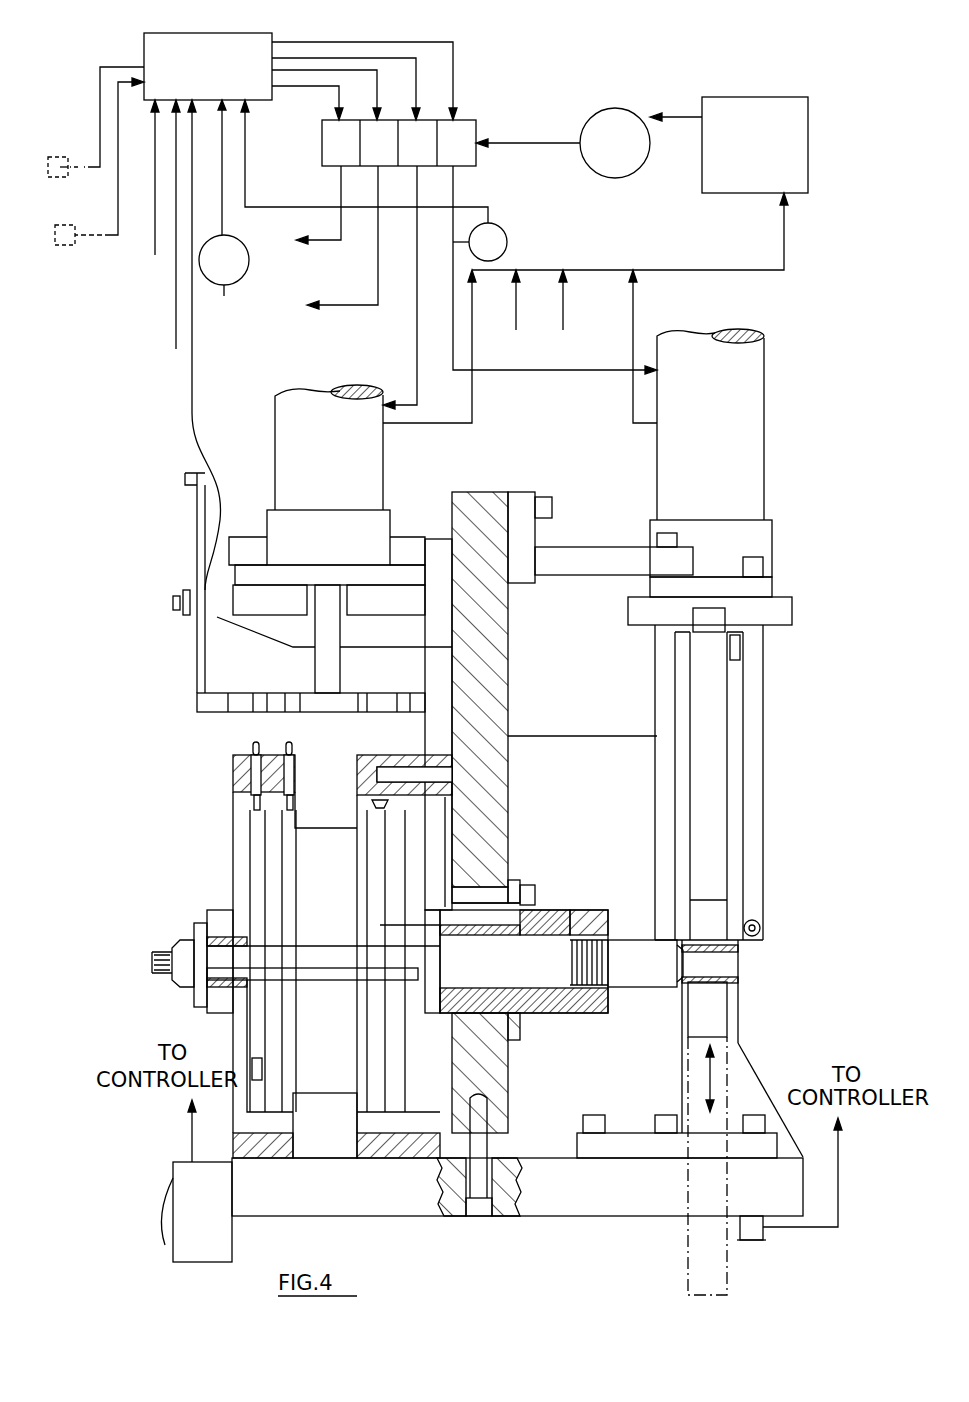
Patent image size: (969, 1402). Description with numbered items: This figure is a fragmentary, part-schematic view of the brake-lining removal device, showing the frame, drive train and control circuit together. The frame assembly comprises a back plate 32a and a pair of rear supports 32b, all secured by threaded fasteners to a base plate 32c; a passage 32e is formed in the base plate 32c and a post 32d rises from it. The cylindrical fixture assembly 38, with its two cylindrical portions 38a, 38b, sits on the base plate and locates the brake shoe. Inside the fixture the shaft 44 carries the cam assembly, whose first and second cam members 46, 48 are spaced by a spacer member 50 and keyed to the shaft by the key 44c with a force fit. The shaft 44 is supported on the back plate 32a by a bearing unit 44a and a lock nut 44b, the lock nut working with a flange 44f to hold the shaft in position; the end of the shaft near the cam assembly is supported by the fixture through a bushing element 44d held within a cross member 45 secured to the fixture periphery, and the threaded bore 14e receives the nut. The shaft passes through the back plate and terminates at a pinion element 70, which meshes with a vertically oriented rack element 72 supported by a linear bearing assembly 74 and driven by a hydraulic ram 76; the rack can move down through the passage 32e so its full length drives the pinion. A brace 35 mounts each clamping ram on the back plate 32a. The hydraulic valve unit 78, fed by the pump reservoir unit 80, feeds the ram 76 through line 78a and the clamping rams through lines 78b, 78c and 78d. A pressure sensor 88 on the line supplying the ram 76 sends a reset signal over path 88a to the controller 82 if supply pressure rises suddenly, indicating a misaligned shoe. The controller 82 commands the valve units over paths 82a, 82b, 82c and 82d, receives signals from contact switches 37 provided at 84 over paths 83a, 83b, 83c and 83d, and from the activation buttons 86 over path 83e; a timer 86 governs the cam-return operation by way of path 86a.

The controller 82 is at (144, 45).
The signal path 82a is at (313, 86).
The signal path 82b is at (325, 70).
The signal path 82c is at (396, 58).
The signal path 82d is at (455, 62).
The hydraulic valve unit 78 is at (470, 114).
The hydraulic pump reservoir unit 80 is at (750, 97).
The pressure sensor 88 is at (507, 238).
The reset signal path 88a is at (315, 205).
The hydraulic line 78a is at (568, 372).
The hydraulic line 78b is at (412, 362).
The hydraulic line 78c is at (360, 302).
The hydraulic line 78d is at (330, 235).
The timer path 86a is at (275, 240).
The activation button 86 is at (66, 157).
The contact switch 84 is at (70, 250).
The signal path 83a is at (192, 372).
The signal path 83b is at (176, 298).
The signal path 83c is at (155, 228).
The signal path 83d is at (118, 200).
The signal path 83e is at (100, 103).
The contact switch 37 is at (178, 587).
The brace 35 is at (436, 539).
The back plate 32a is at (478, 492).
The rear support 32b is at (572, 736).
The base plate 32c is at (375, 757).
The frame post 32d is at (500, 1216).
The passage 32e is at (680, 1222).
The hydraulic ram 76 is at (752, 415).
The rack element 72 is at (720, 710).
The linear bearing assembly 74 is at (735, 753).
The pinion element 70 is at (746, 982).
The fixture assembly 38 is at (220, 826).
The cylindrical portion 38a is at (233, 800).
The cylindrical portion 38b is at (410, 757).
The shaft 44 is at (152, 962).
The bearing unit 44a is at (482, 992).
The lock nut 44b is at (595, 910).
The key 44c is at (327, 980).
The bushing element 44d is at (205, 932).
The flange 44f is at (380, 925).
The threaded bore 14e is at (548, 972).
The cross member 45 is at (218, 910).
The first cam member 46 is at (272, 1110).
The second cam member 48 is at (380, 1038).
The spacer member 50 is at (318, 1098).